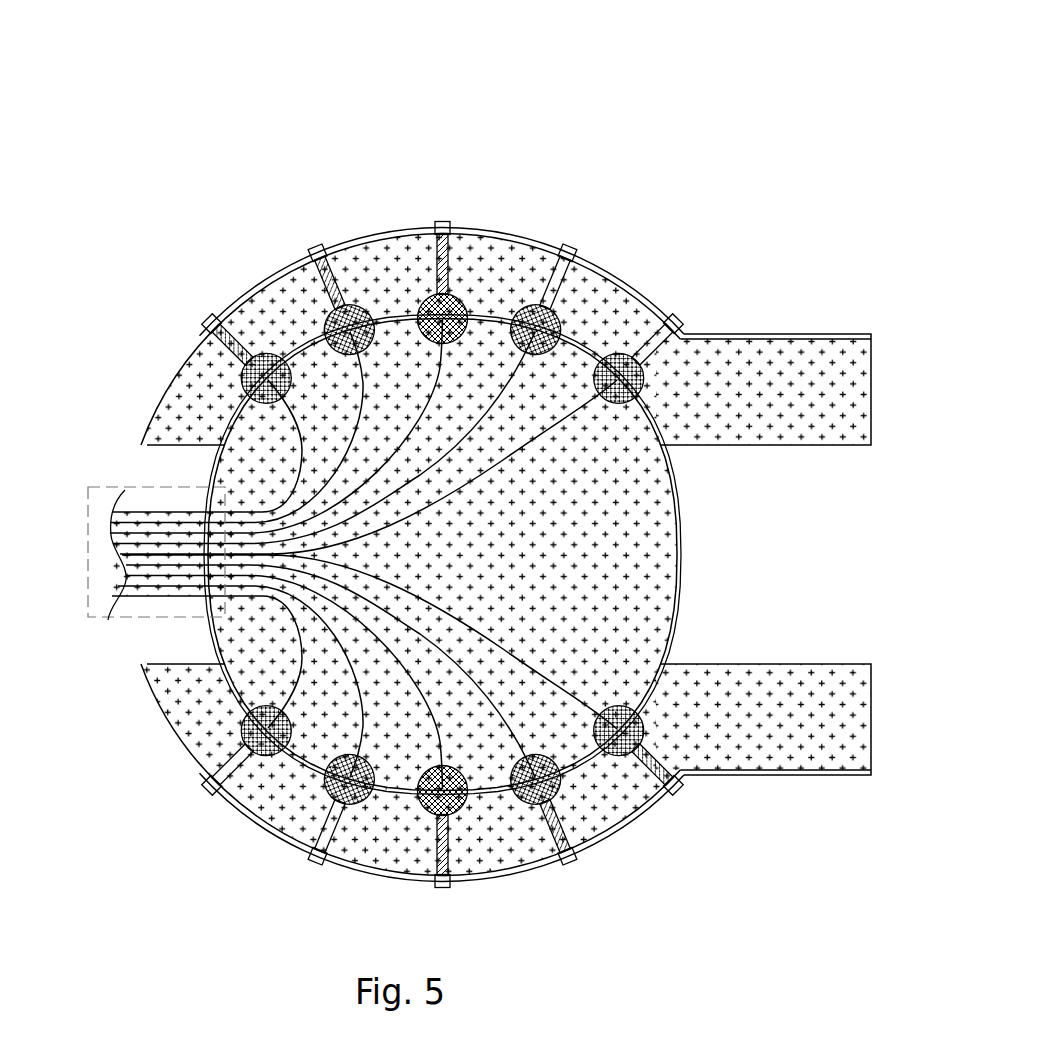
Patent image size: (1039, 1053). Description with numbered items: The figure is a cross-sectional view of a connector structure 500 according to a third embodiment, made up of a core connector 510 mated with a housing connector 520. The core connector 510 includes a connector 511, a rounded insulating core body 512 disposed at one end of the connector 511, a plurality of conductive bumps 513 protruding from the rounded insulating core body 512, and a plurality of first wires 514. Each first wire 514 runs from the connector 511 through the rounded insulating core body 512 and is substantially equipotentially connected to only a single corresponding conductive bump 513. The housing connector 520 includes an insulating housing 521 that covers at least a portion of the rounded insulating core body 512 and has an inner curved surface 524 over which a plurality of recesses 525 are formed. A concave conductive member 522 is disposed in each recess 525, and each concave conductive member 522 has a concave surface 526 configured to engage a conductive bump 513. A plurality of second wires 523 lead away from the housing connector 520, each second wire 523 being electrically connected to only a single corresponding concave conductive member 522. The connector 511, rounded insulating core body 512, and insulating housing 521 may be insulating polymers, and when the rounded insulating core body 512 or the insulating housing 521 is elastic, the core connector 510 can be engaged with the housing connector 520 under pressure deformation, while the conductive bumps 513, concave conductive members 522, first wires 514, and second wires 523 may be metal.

The connector structure 500 is at (148, 46).
The core connector 510 is at (270, 446).
The connector 511 is at (108, 620).
The rounded insulating core body 512 is at (663, 553).
The conductive bumps 513 is at (558, 322).
The first wires 514 is at (163, 514).
The housing connector 520 is at (560, 229).
The insulating housing 521 is at (855, 388).
The concave conductive members 522 is at (364, 314).
The second wires 523 is at (515, 232).
The inner curved surface 524 is at (288, 362).
The recesses 525 is at (334, 321).
The concave surface 526 is at (456, 303).